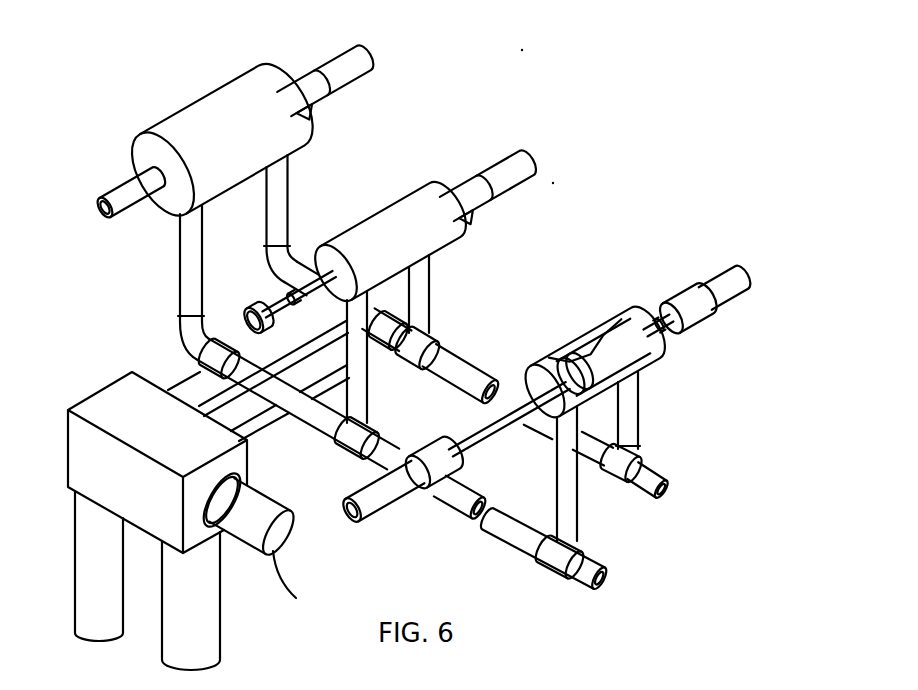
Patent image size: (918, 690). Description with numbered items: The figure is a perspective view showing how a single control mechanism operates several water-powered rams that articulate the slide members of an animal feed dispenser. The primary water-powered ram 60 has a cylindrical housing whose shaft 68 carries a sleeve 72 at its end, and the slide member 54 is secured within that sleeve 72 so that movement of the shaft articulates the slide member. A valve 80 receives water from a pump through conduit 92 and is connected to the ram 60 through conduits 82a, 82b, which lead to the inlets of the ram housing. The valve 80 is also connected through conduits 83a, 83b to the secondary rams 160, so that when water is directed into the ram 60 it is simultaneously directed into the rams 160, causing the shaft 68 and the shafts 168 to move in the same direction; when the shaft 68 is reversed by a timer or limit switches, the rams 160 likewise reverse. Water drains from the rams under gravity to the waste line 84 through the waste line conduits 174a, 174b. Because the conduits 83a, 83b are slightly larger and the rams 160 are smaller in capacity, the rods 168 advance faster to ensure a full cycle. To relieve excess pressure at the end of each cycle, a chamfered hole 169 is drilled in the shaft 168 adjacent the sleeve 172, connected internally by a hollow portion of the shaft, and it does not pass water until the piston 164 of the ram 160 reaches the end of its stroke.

The water-powered ram 60 is at (206, 74).
The sleeve 72 is at (317, 72).
The slide member 54 is at (348, 47).
The shaft 68 is at (326, 101).
The conduit 82a is at (186, 246).
The conduit 82b is at (290, 181).
The conduit 83a is at (309, 420).
The conduit 83b is at (452, 373).
The secondary ram 160 is at (409, 187).
The shaft 168 is at (470, 207).
The piston 164 is at (569, 372).
The hole 169 is at (663, 331).
The sleeve 172 is at (698, 300).
The waste line conduit 174a is at (543, 390).
The waste line conduit 174b is at (630, 373).
The valve 80 is at (112, 398).
The conduit 92 is at (83, 612).
The waste line 84 is at (207, 625).